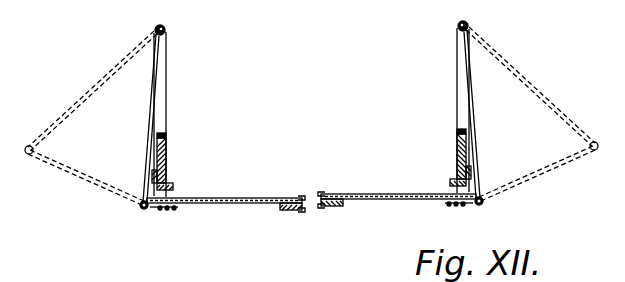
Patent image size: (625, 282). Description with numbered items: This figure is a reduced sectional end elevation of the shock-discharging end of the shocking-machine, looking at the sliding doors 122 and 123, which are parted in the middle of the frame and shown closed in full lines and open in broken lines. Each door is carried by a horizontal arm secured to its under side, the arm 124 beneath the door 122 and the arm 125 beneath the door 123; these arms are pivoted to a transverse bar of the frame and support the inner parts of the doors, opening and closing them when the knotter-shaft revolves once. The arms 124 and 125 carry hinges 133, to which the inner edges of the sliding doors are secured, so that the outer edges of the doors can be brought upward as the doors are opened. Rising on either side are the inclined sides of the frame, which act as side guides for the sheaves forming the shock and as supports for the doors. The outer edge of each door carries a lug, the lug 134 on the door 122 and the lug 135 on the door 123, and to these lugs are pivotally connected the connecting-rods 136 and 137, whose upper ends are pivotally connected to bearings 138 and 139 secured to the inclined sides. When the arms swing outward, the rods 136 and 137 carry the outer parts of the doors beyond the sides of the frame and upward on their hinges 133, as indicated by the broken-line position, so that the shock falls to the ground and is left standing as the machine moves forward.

The sliding door 122 is at (230, 203).
The sliding door 123 is at (402, 203).
The horizontal arm 124 is at (303, 212).
The horizontal arm 125 is at (328, 211).
The hinge 133 is at (282, 206).
The lug 134 is at (143, 207).
The lug 135 is at (483, 203).
The connecting-rod 136 is at (152, 126).
The connecting-rod 137 is at (473, 121).
The bearing 138 is at (166, 88).
The bearing 139 is at (456, 86).